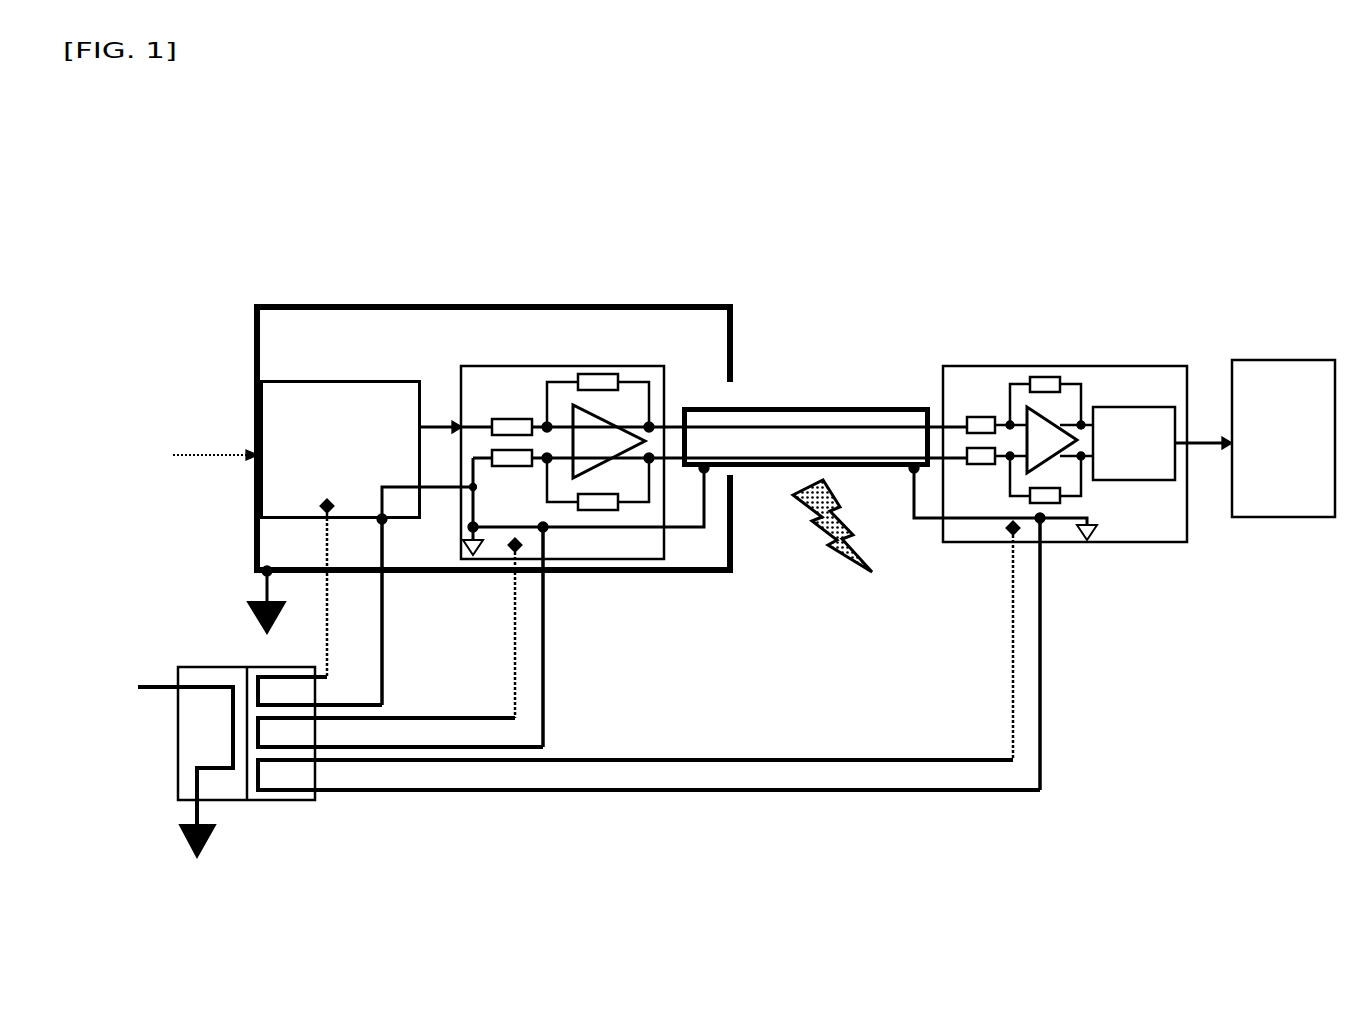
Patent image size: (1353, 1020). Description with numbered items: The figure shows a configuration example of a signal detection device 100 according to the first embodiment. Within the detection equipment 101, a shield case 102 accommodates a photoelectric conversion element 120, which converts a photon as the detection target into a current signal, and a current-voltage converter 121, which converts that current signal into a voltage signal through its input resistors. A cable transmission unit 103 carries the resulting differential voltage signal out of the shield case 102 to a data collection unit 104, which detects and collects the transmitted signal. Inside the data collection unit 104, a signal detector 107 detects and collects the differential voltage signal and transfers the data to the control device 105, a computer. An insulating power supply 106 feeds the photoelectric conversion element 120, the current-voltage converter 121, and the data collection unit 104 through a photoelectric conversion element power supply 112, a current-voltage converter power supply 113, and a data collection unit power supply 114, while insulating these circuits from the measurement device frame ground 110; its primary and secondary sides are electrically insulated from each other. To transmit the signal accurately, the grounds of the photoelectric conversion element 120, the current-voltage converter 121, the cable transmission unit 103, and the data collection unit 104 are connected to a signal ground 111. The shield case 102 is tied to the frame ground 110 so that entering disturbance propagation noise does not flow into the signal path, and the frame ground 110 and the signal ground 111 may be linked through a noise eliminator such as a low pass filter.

The signal detection device 100 is at (720, 165).
The detection equipment 101 is at (418, 280).
The shield case 102 is at (252, 320).
The cable transmission unit 103 is at (882, 407).
The data collection unit 104 is at (1126, 542).
The control device 105 is at (1293, 358).
The insulating power supply 106 is at (222, 803).
The signal detector 107 is at (1157, 481).
The frame ground 110 is at (162, 890).
The signal ground 111 is at (465, 553).
The photoelectric conversion element power supply 112 is at (293, 503).
The current-voltage converter power supply 113 is at (508, 557).
The data collection unit power supply 114 is at (1010, 533).
The photoelectric conversion element 120 is at (352, 380).
The current-voltage converter 121 is at (665, 367).